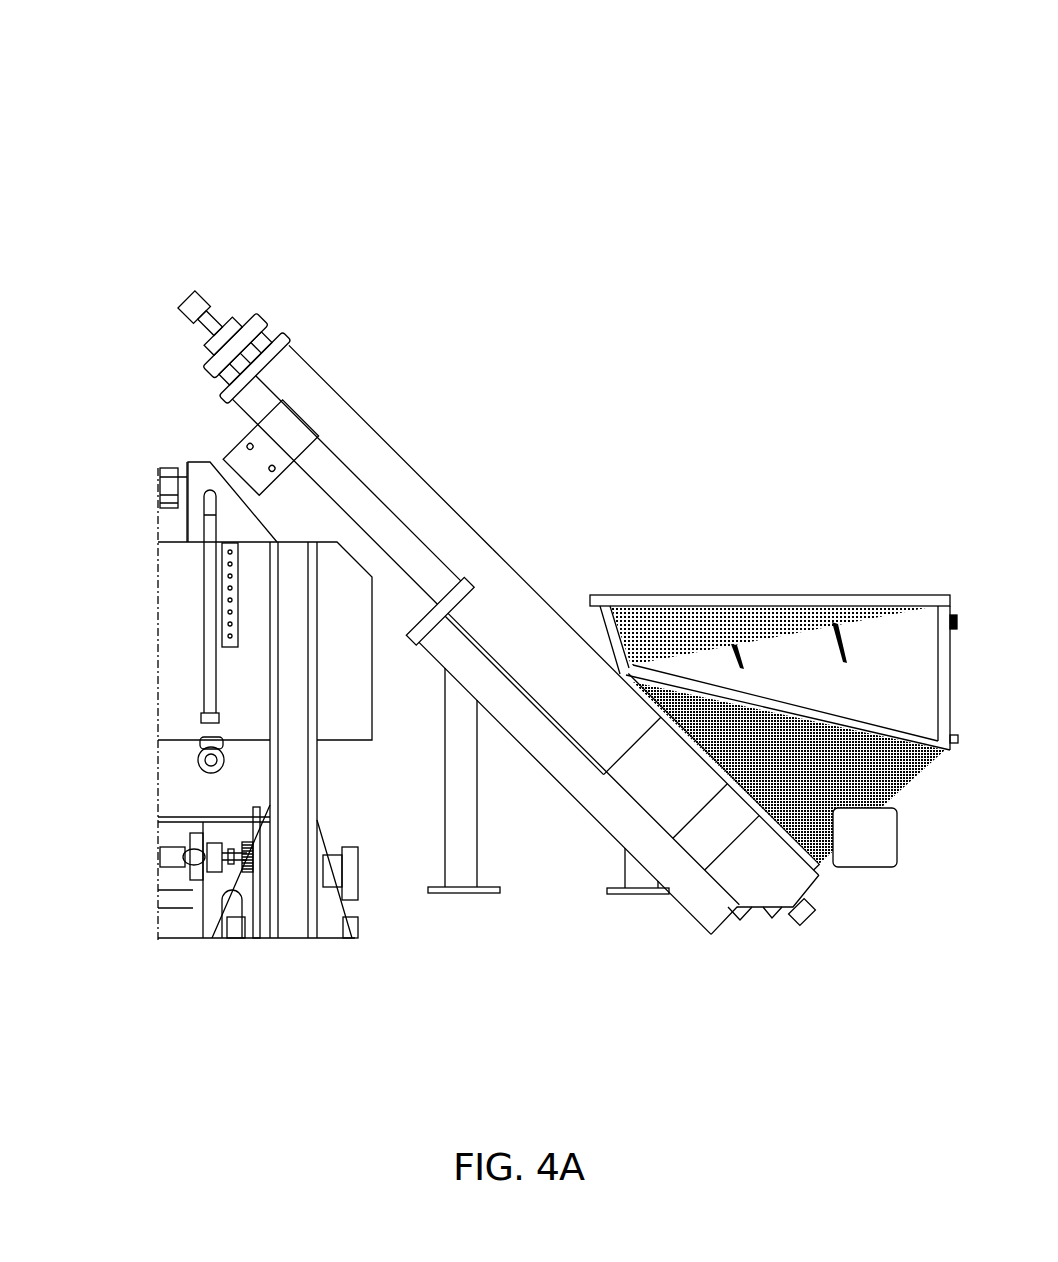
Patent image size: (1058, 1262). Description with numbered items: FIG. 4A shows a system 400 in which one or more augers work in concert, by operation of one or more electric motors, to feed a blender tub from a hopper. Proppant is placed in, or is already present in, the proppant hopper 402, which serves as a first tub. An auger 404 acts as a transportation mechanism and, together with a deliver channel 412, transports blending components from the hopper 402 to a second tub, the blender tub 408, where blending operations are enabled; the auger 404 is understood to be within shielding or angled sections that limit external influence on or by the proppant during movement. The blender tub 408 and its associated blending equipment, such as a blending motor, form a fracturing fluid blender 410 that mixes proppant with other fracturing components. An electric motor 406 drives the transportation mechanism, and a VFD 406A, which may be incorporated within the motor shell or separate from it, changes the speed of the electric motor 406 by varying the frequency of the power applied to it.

The system 400 is at (767, 99).
The hopper 402 is at (783, 623).
The auger 404 is at (367, 435).
The electric motor 406 is at (262, 323).
The VFD 406A is at (271, 334).
The blender tub 408 is at (172, 630).
The fracturing fluid blender 410 is at (155, 820).
The deliver channel 412 is at (222, 456).